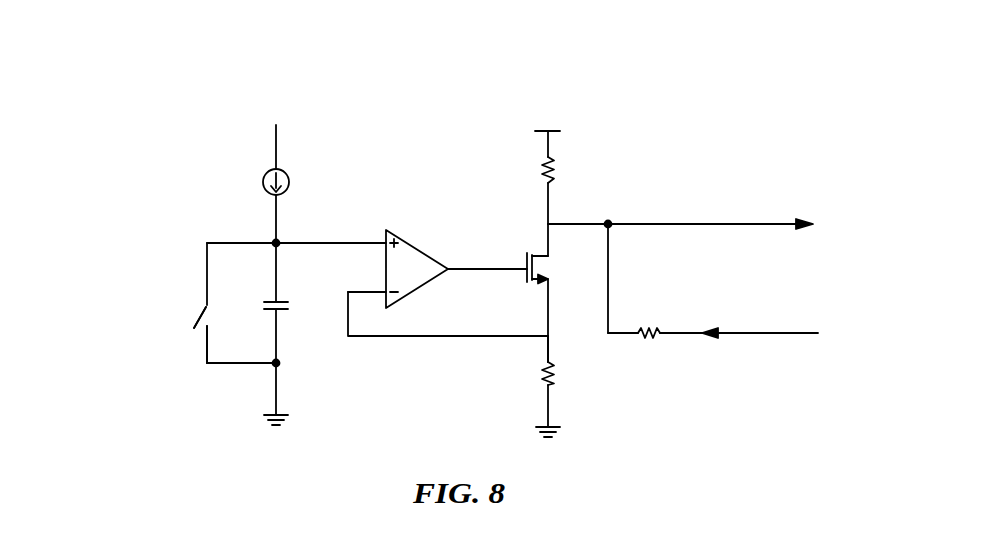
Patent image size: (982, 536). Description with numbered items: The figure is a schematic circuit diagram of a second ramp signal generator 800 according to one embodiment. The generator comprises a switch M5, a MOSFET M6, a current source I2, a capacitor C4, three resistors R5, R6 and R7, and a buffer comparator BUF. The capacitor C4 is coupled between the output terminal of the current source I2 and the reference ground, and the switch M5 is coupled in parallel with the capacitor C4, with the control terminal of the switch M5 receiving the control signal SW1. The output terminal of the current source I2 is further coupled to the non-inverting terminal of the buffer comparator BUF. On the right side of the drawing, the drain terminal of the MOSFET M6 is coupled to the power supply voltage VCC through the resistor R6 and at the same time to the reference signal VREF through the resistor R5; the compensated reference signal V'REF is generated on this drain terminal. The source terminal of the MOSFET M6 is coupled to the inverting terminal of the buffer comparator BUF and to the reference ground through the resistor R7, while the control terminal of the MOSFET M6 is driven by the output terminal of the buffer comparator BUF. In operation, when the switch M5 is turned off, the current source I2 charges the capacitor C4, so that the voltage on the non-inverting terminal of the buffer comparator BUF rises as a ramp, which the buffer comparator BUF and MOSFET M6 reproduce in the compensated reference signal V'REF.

The second ramp signal generator 800 is at (792, 88).
The current source I2 is at (286, 184).
The control signal SW1 is at (180, 318).
The switch M5 is at (220, 335).
The capacitor C4 is at (288, 303).
The buffer comparator BUF is at (448, 276).
The MOSFET M6 is at (560, 293).
The power supply voltage VCC is at (544, 117).
The resistor R6 is at (566, 177).
The compensated reference signal V'REF is at (680, 211).
The resistor R5 is at (636, 294).
The reference signal VREF is at (739, 321).
The resistor R7 is at (563, 386).